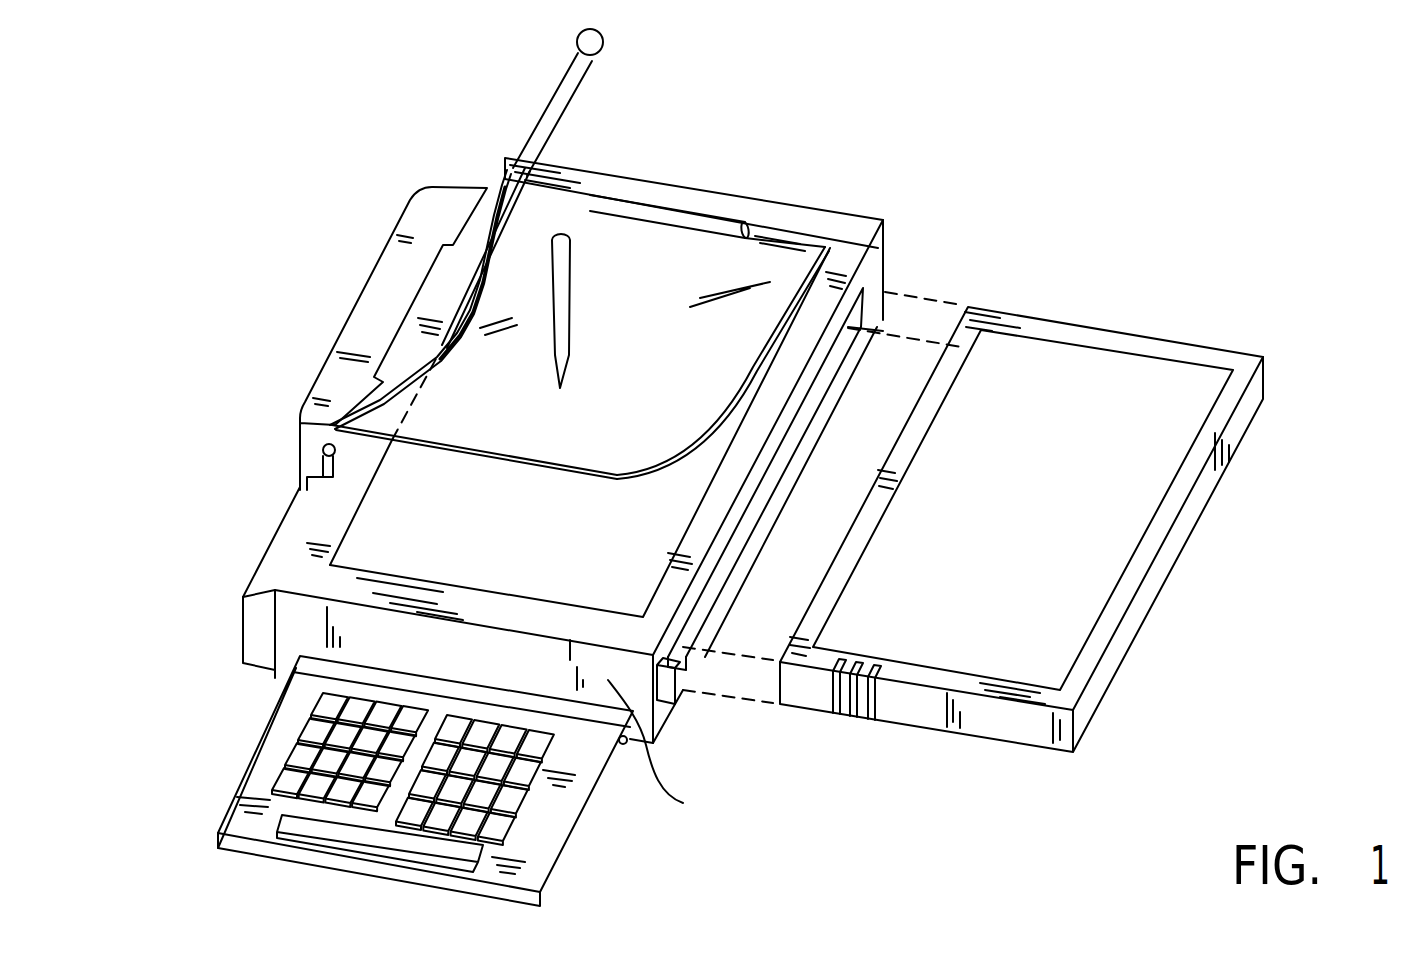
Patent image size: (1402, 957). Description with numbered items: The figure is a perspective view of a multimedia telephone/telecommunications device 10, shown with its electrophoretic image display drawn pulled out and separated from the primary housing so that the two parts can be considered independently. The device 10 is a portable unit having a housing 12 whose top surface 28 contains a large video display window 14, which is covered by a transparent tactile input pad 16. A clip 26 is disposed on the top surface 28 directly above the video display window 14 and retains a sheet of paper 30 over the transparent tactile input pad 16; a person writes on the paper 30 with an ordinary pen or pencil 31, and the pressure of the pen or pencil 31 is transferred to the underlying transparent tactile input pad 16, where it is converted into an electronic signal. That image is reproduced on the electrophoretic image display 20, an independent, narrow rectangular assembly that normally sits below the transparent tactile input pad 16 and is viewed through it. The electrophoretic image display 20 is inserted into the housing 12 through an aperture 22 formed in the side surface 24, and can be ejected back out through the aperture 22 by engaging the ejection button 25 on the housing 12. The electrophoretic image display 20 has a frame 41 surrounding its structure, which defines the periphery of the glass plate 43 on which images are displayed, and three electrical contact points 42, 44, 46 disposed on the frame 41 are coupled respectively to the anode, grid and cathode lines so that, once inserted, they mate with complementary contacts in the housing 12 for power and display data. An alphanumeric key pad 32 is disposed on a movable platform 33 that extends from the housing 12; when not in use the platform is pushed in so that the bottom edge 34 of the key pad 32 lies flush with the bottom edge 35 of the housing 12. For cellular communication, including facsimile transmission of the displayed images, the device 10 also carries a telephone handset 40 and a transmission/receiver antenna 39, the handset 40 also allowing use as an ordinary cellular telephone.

The multimedia telephone/telecommunications device 10 is at (782, 97).
The housing 12 is at (670, 176).
The video display window 14 is at (368, 478).
The transparent tactile input pad 16 is at (365, 527).
The electrophoretic image display 20 is at (1093, 312).
The aperture 22 is at (815, 400).
The side surface 24 is at (873, 261).
The ejection button 25 is at (668, 693).
The clip 26 is at (722, 218).
The top surface 28 is at (570, 177).
The sheet of paper 30 is at (520, 232).
The pen or pencil 31 is at (569, 297).
The alphanumeric key pad 32 is at (537, 789).
The movable platform 33 is at (247, 823).
The bottom edge of keypad 34 is at (406, 884).
The bottom edge of housing 35 is at (664, 750).
The transmission/receiver antenna 39 is at (572, 95).
The telephone handset 40 is at (378, 262).
The frame 41 is at (1180, 494).
The electrical contact point 42 is at (832, 702).
The glass plate 43 is at (1173, 437).
The electrical contact point 44 is at (853, 715).
The electrical contact point 46 is at (875, 717).